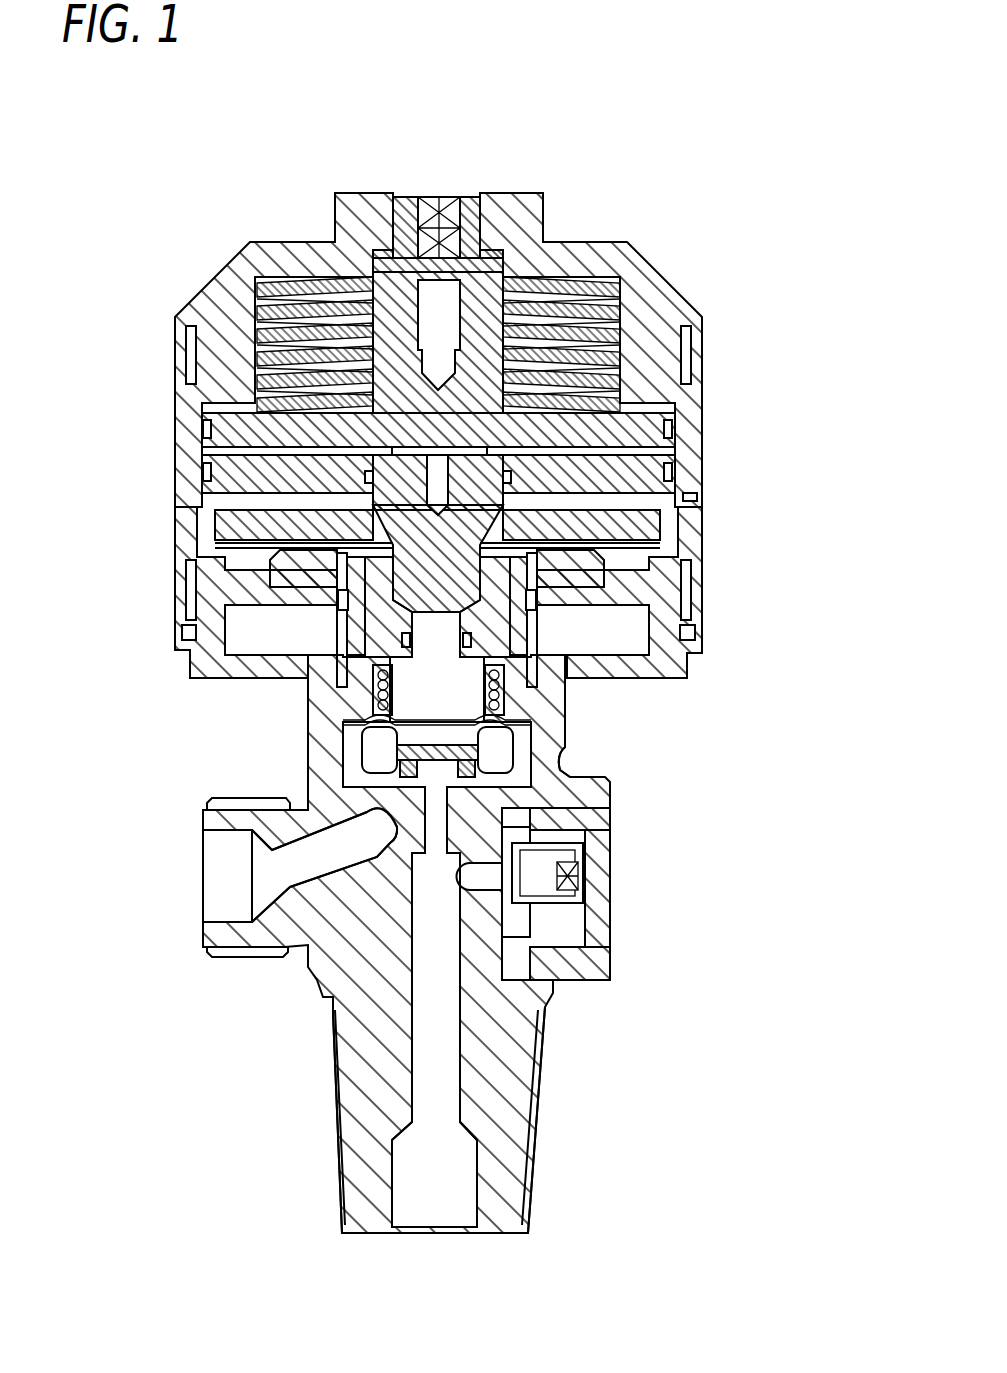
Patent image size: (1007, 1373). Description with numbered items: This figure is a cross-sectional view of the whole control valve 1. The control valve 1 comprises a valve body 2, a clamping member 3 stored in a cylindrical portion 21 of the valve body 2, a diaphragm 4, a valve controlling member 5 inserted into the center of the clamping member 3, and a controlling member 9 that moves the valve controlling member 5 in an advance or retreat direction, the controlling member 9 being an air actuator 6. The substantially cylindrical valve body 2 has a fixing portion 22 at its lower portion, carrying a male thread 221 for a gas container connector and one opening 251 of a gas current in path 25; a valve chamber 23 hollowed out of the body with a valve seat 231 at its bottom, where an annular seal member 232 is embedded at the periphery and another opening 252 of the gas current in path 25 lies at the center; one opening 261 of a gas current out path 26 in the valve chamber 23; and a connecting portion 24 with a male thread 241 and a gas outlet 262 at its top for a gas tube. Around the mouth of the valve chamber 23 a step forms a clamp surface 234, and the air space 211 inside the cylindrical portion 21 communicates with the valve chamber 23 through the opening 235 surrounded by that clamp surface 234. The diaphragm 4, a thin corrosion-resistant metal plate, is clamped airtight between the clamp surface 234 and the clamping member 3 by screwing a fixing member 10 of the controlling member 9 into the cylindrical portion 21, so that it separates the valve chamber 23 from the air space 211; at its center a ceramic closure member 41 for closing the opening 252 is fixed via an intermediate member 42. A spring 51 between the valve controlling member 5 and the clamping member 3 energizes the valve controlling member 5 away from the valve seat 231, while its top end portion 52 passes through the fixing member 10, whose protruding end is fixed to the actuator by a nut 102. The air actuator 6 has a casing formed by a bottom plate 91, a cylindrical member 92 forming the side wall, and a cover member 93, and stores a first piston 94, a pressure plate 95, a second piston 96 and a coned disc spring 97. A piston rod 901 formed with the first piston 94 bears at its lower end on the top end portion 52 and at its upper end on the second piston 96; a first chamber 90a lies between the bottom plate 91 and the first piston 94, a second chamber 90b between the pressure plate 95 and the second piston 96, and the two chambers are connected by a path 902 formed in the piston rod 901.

The control valve 1 is at (742, 252).
The valve body 2 is at (556, 1030).
The clamping member 3 is at (330, 678).
The diaphragm 4 is at (372, 722).
The valve controlling member 5 is at (500, 690).
The air actuator 6 is at (358, 189).
The controlling member 9 is at (266, 194).
The fixing member 10 is at (357, 563).
The cylindrical portion 21 is at (585, 700).
The fixing portion 22 is at (530, 1203).
The valve chamber 23 is at (378, 745).
The connecting portion 24 is at (205, 932).
The gas current in path 25 is at (423, 1037).
The gas current out path 26 is at (290, 887).
The closure member 41 is at (380, 737).
The intermediate member 42 is at (310, 968).
The spring 51 is at (367, 668).
The top end portion 52 is at (387, 517).
The first chamber 90a is at (625, 597).
The second chamber 90b is at (667, 452).
The bottom plate 91 is at (687, 675).
The cylindrical member 92 is at (205, 470).
The cover member 93 is at (245, 302).
The first piston 94 is at (270, 541).
The pressure plate 95 is at (228, 414).
The second piston 96 is at (238, 412).
The coned disc spring 97 is at (623, 298).
The nut 102 is at (560, 578).
The air space 211 is at (657, 652).
The male thread 221 is at (333, 1142).
The valve seat 231 is at (540, 780).
The annular seal member 232 is at (255, 802).
The clamp surface 234 is at (495, 757).
The opening 235 is at (515, 770).
The male thread 241 is at (225, 957).
The opening 251 is at (437, 1215).
The opening 252 is at (550, 993).
The opening 261 is at (405, 768).
The gas outlet 262 is at (292, 860).
The piston rod 901 is at (680, 612).
The path 902 is at (583, 493).